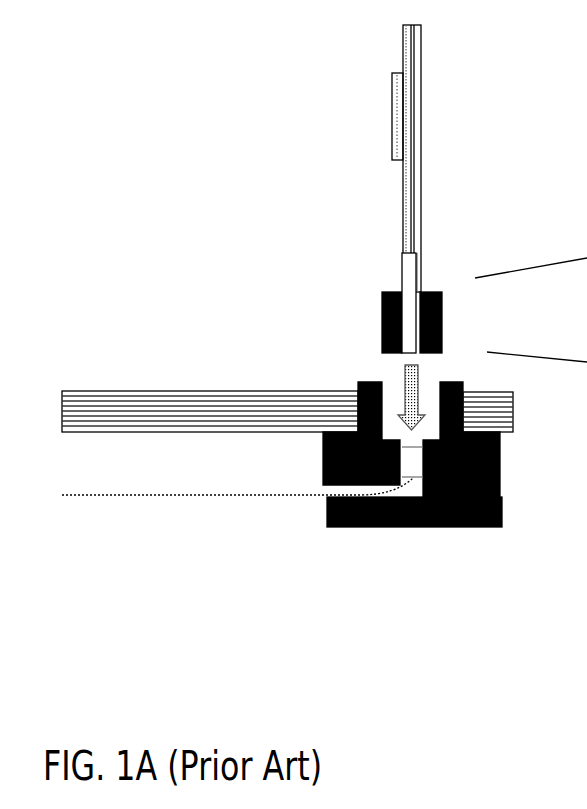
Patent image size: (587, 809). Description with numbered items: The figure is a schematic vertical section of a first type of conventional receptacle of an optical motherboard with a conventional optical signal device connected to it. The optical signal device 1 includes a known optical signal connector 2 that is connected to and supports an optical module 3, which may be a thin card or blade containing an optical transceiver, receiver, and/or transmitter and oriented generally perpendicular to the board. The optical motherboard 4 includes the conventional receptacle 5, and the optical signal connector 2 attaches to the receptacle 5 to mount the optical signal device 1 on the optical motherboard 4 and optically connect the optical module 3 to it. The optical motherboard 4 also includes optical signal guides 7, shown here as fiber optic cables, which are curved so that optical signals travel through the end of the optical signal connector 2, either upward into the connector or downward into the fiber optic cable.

The optical signal device 1 is at (357, 85).
The optical signal connector 2 is at (382, 292).
The optical module 3 is at (408, 73).
The optical motherboard 4 is at (137, 400).
The receptacle 5 is at (452, 380).
The optical signal guides 7 is at (327, 492).